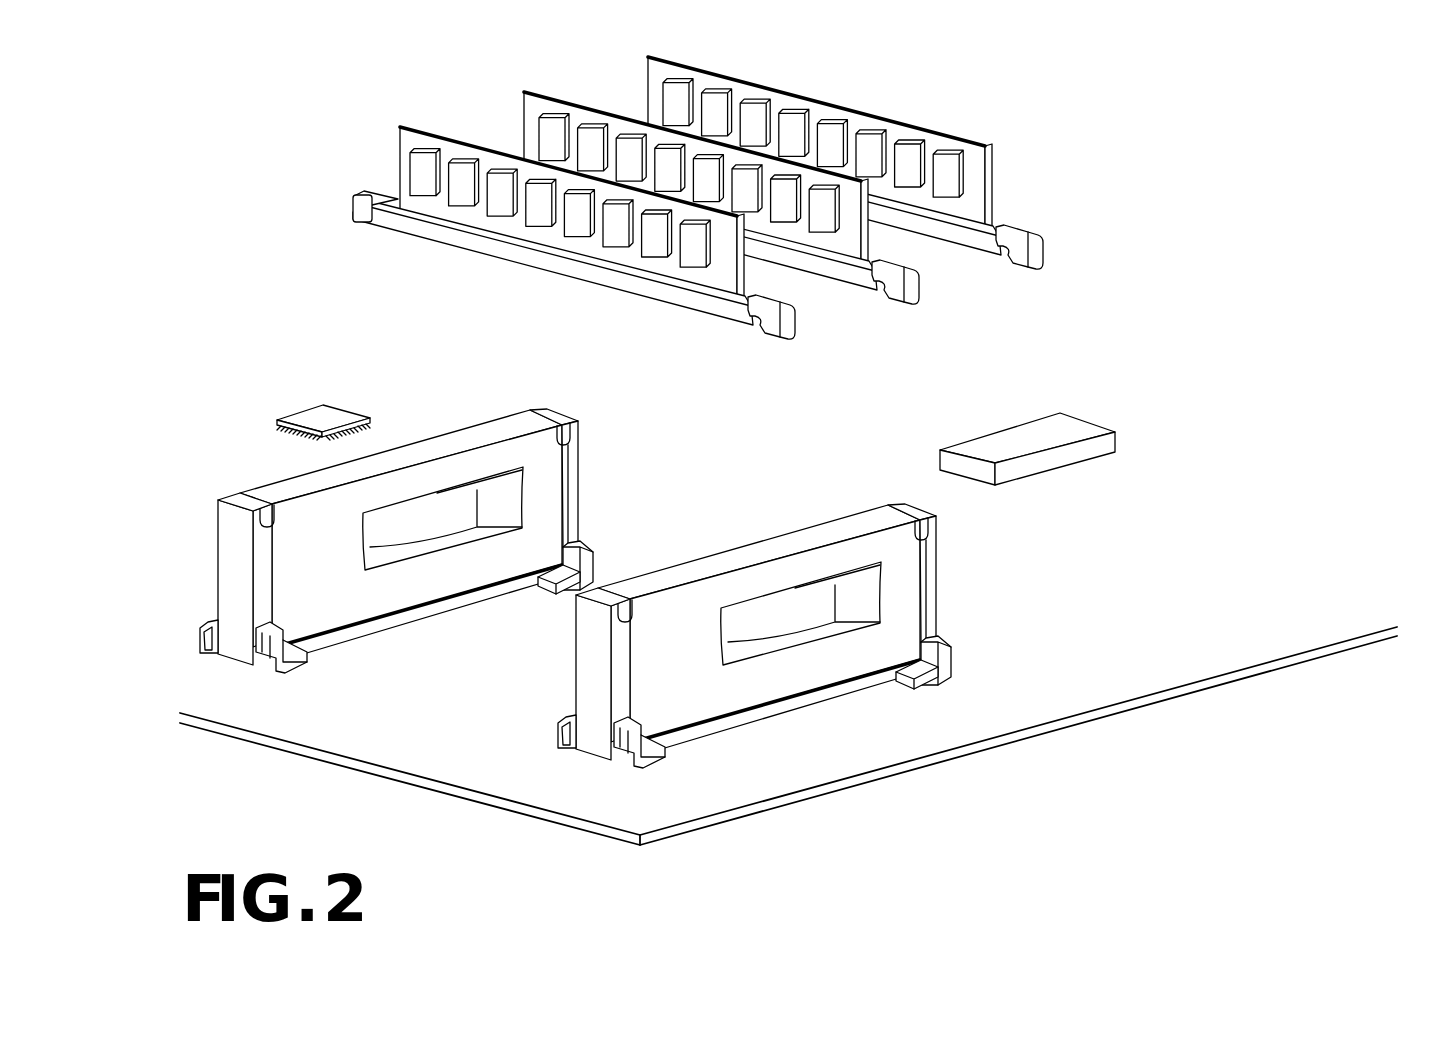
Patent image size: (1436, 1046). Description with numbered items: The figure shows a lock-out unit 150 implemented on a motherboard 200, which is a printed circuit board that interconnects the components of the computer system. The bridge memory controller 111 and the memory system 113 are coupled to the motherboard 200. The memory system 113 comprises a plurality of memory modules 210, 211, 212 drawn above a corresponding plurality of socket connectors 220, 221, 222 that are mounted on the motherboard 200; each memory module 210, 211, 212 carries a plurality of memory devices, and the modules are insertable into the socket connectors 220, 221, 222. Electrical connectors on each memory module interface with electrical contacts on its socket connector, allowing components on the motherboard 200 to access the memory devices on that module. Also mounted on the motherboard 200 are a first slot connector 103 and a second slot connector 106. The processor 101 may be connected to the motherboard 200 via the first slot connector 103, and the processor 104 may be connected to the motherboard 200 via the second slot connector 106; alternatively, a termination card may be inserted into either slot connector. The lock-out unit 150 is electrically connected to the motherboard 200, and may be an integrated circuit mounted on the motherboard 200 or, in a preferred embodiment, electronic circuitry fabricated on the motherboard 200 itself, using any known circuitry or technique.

The memory system 113 is at (1069, 91).
The memory module 210 is at (397, 161).
The memory module 211 is at (521, 118).
The memory module 212 is at (645, 88).
The socket connector 220 is at (703, 308).
The socket connector 221 is at (858, 280).
The socket connector 222 is at (972, 243).
The processor 104 is at (508, 426).
The second slot connector 106 is at (577, 481).
The processor 101 is at (866, 521).
The first slot connector 103 is at (945, 658).
The bridge memory controller 111 is at (338, 414).
The lock-out unit 150 is at (1083, 428).
The motherboard 200 is at (1160, 677).